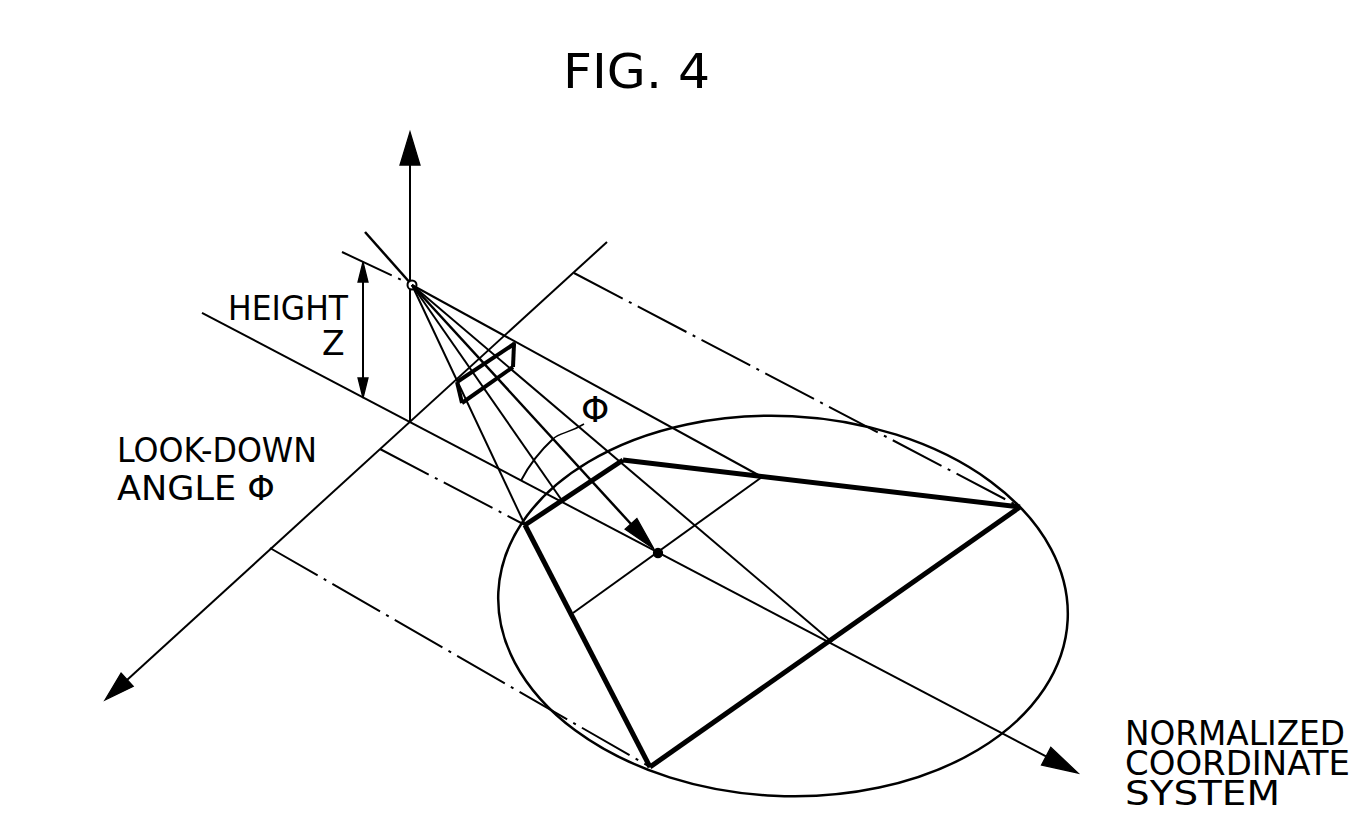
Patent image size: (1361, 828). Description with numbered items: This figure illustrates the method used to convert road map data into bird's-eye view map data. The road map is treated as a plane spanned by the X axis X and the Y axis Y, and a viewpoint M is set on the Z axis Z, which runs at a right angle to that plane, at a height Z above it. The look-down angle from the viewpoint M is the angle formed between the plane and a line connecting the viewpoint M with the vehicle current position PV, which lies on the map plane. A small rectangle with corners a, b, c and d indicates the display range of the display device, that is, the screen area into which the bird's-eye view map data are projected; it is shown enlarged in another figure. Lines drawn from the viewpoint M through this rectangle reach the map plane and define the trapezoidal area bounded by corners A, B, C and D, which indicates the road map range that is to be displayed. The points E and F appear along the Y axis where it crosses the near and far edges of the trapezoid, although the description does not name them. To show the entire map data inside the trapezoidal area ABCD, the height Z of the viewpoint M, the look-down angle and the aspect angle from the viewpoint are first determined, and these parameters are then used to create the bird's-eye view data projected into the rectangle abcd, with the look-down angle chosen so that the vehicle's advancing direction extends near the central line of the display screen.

The viewpoint M is at (420, 281).
The vehicle current position PV is at (657, 557).
The corner of trapezoidal area A is at (531, 526).
The corner of trapezoidal area B is at (582, 463).
The corner of trapezoidal area C is at (840, 486).
The corner of trapezoidal area D is at (829, 661).
The point E on near edge along optical axis E is at (496, 418).
The point F on far edge along optical axis F is at (629, 492).
The corner of rectangular display area a is at (474, 398).
The corner of rectangular display area b is at (513, 367).
The corner of rectangular display area c is at (514, 344).
The corner of rectangular display area d is at (457, 382).
The X axis X is at (342, 494).
The Y axis Y is at (654, 554).
The Z axis Z is at (411, 259).